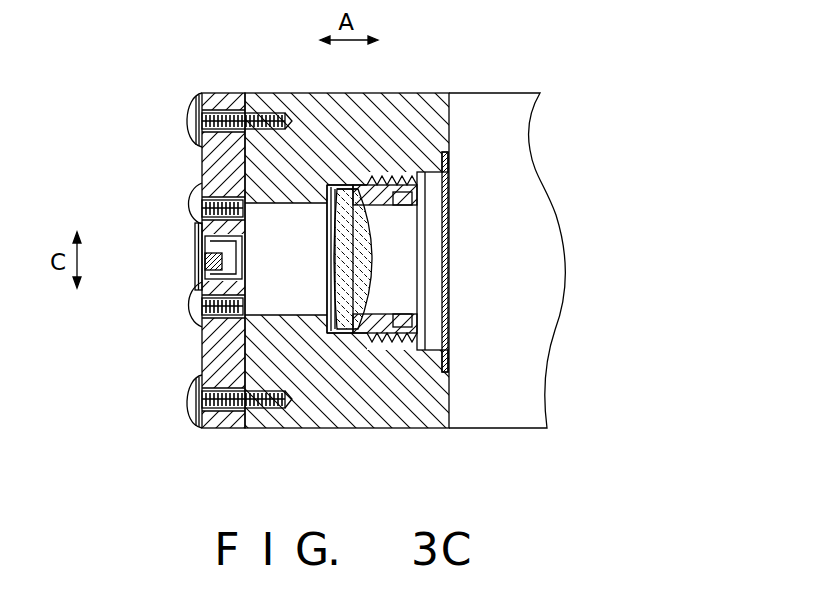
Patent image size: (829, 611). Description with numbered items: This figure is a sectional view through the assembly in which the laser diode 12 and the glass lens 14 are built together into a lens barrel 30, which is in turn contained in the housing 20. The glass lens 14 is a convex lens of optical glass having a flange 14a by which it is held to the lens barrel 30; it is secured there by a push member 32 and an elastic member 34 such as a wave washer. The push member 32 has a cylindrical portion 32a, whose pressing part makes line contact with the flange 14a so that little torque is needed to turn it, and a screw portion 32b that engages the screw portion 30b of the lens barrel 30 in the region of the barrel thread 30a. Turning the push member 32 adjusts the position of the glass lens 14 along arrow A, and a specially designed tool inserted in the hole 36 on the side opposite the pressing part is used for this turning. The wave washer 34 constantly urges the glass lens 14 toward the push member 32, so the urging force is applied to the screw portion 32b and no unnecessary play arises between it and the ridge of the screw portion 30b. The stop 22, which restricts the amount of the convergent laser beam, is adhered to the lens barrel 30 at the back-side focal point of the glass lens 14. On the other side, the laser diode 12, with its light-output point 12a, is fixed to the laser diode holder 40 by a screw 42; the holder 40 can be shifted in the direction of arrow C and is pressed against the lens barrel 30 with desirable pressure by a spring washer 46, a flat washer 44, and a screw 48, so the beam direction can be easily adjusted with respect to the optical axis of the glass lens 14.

The laser diode 12 is at (196, 250).
The light-output point 12a is at (208, 262).
The glass lens 14 is at (373, 254).
The flange 14a is at (333, 187).
The housing 20 is at (508, 93).
The stop 22 is at (444, 348).
The lens barrel 30 is at (403, 163).
The threaded bore 30a is at (358, 176).
The screw portion 30b is at (437, 172).
The push member 32 is at (382, 314).
The cylindrical portion 32a is at (398, 208).
The screw portion 32b is at (395, 343).
The elastic member 34 is at (356, 222).
The hole 36 is at (447, 178).
The laser diode holder 40 is at (228, 93).
The screw 42 is at (186, 190).
The flat washer 44 is at (198, 93).
The spring washer 46 is at (190, 93).
The screw 48 is at (185, 116).